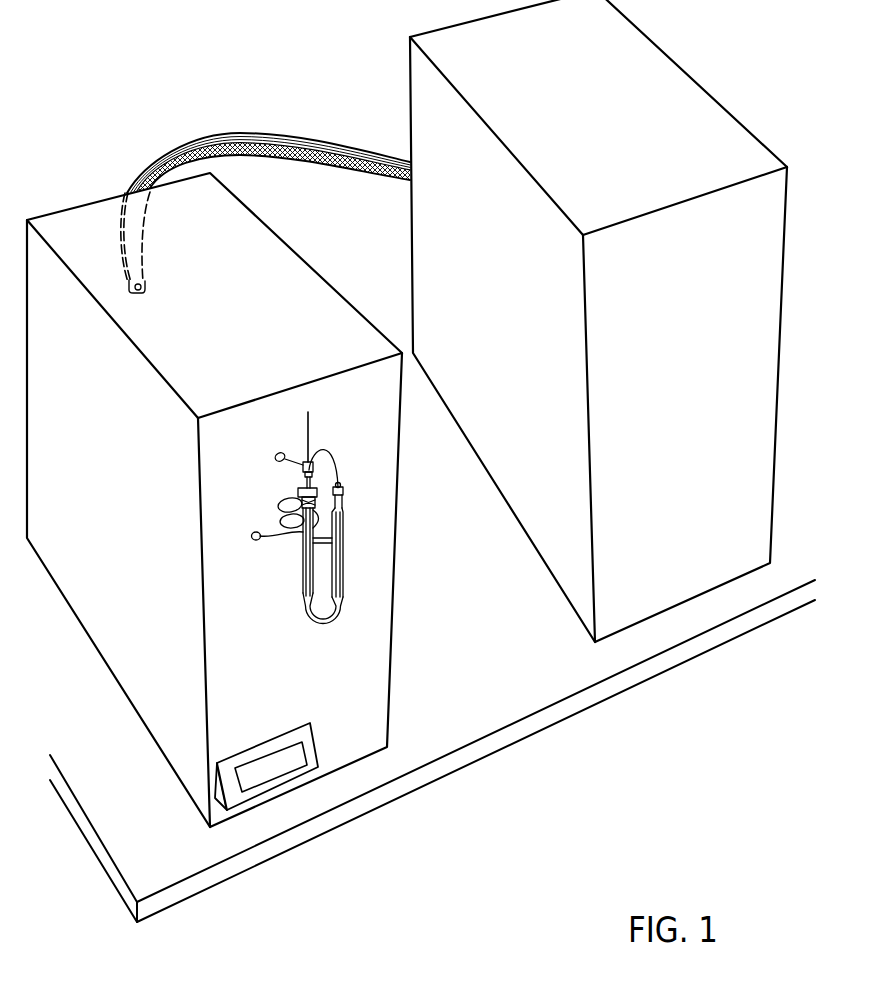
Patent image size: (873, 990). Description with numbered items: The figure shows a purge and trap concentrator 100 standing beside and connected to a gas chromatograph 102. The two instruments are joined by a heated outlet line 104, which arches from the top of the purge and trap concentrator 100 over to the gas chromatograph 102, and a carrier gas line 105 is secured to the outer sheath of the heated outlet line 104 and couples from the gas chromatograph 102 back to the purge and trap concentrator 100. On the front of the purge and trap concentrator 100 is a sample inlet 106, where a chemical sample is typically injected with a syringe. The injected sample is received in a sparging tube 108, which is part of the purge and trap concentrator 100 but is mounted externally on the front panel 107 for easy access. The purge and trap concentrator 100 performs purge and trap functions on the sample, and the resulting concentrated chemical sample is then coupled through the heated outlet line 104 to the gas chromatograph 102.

The purge and trap concentrator 100 is at (308, 265).
The gas chromatograph 102 is at (677, 376).
The heated outlet line 104 is at (323, 163).
The carrier gas line 105 is at (325, 138).
The sample inlet 106 is at (311, 421).
The front panel 107 is at (355, 660).
The sparging tube 108 is at (342, 578).